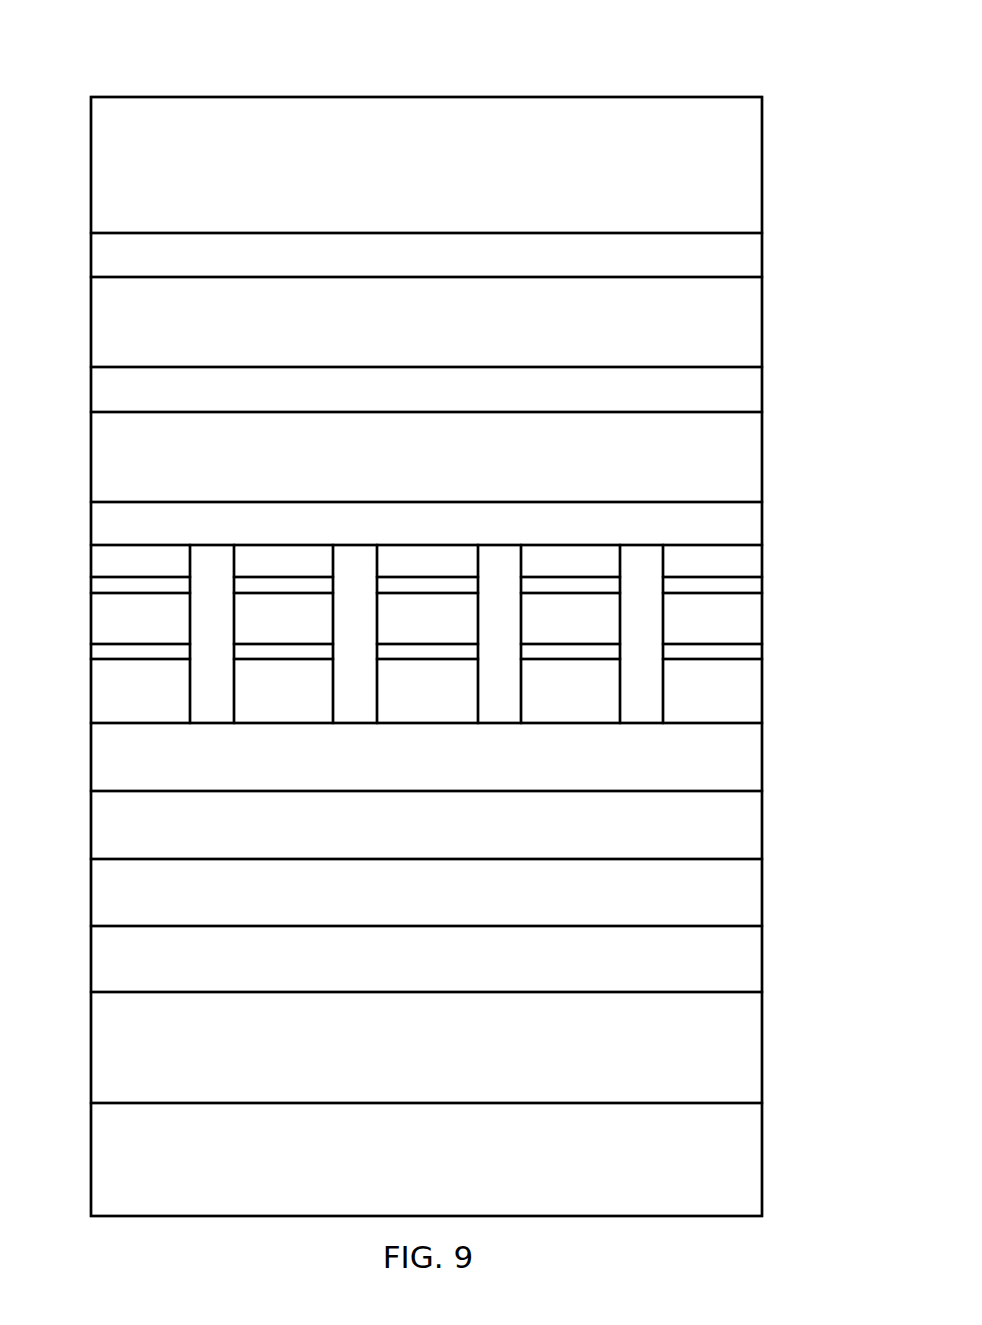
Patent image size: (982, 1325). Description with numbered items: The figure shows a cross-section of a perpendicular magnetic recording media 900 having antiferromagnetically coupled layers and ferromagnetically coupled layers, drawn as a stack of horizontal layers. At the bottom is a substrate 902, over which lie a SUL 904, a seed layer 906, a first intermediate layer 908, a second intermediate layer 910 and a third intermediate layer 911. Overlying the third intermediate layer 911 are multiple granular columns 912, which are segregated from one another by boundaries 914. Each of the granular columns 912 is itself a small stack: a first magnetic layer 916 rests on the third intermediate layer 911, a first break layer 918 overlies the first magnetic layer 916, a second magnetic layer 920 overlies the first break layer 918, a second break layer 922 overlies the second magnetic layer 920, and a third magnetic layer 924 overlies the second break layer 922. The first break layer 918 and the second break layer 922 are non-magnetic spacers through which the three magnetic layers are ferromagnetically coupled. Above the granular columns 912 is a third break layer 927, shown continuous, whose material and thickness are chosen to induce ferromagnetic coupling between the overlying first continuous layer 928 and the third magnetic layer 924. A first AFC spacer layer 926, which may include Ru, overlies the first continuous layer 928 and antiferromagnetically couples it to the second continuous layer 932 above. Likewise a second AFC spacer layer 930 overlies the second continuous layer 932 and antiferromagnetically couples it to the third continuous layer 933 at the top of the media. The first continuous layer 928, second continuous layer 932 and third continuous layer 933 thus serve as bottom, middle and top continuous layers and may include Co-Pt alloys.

The perpendicular magnetic recording media 900 is at (82, 57).
The substrate 902 is at (409, 1170).
The SUL 904 is at (409, 1058).
The seed layer 906 is at (409, 969).
The first intermediate layer 908 is at (409, 903).
The second intermediate layer 910 is at (409, 836).
The third intermediate layer 911 is at (409, 768).
The granular columns 912 is at (81, 545).
The boundaries 914 is at (497, 715).
The first magnetic layer 916 is at (122, 703).
The first break layer 918 is at (755, 653).
The second magnetic layer 920 is at (122, 630).
The second break layer 922 is at (755, 586).
The third magnetic layer 924 is at (122, 573).
The first AFC spacer layer 926 is at (409, 400).
The third break layer 927 is at (409, 534).
The first continuous layer 928 is at (409, 468).
The second AFC spacer layer 930 is at (409, 266).
The second continuous layer 932 is at (409, 333).
The third continuous layer 933 is at (409, 176).